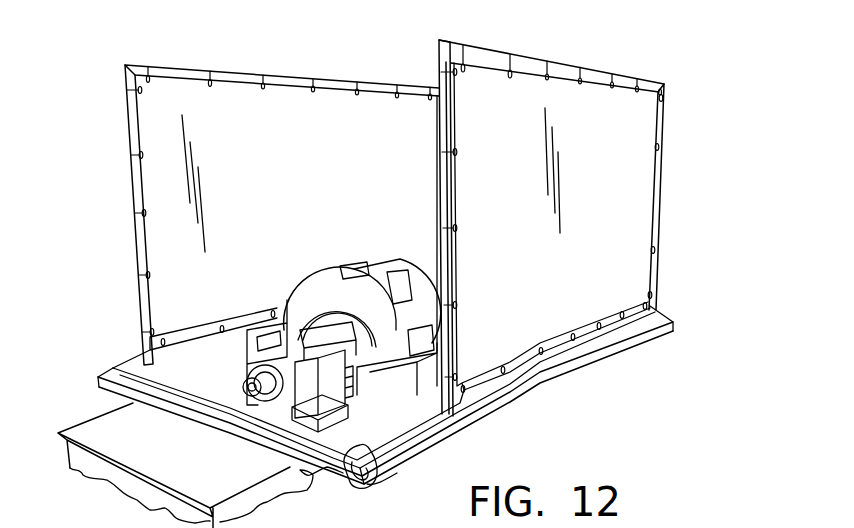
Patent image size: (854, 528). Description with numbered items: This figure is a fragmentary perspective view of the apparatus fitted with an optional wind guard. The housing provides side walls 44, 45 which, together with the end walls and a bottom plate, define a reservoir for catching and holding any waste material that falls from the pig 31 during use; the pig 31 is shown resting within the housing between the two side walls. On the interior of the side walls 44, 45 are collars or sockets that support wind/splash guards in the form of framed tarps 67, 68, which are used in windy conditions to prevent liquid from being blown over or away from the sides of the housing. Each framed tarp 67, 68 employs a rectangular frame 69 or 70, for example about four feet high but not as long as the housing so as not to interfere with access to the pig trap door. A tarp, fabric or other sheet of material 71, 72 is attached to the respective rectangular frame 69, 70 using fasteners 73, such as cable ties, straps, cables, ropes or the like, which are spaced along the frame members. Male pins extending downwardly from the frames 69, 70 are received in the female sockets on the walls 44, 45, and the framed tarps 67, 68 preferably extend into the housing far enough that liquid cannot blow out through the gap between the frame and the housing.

The pig 31 is at (347, 260).
The side wall 44 is at (220, 385).
The side wall 45 is at (490, 415).
The framed tarp 67 is at (523, 303).
The framed tarp 68 is at (252, 143).
The rectangular frame 69 is at (663, 117).
The rectangular frame 70 is at (127, 130).
The sheet of material 71 is at (628, 190).
The sheet of material 72 is at (160, 118).
The fasteners 73 is at (148, 75).